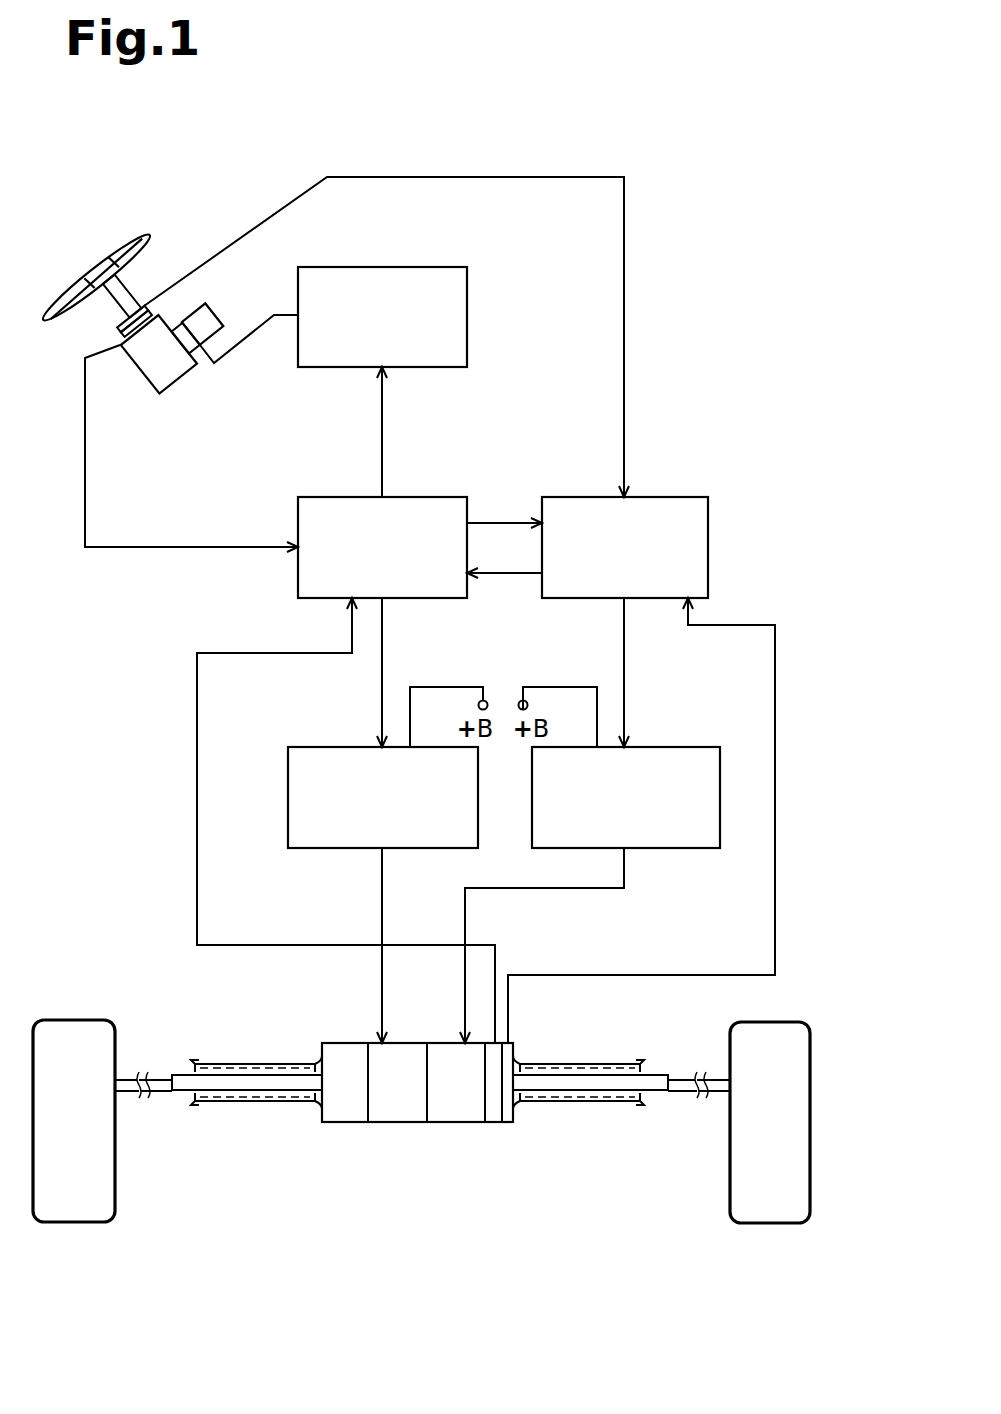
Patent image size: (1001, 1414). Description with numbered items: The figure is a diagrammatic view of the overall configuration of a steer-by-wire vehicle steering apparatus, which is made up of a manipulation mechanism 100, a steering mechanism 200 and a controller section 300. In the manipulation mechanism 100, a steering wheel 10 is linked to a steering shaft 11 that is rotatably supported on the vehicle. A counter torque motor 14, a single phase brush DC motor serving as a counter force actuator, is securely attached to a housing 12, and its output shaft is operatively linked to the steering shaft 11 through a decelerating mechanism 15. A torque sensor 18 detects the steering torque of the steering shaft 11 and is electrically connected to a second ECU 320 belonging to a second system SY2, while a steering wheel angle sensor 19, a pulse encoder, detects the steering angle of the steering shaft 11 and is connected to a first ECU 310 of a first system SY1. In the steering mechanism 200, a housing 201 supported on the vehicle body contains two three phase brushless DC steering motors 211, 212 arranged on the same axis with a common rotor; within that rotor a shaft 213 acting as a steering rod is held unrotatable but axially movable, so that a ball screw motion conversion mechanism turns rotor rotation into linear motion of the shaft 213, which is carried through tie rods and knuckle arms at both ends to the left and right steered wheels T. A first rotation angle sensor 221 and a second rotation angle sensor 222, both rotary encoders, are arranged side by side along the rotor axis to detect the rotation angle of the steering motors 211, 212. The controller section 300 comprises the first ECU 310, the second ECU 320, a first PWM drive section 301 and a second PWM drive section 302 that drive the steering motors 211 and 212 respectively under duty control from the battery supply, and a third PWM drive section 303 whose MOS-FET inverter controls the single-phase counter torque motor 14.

The steering wheel 10 is at (128, 240).
The steering shaft 11 is at (123, 300).
The housing 12 is at (157, 387).
The counter torque motor 14 is at (212, 308).
The decelerating mechanism 15 is at (207, 349).
The torque sensor 18 is at (117, 325).
The steering wheel angle sensor 19 is at (118, 340).
The manipulation mechanism 100 is at (148, 312).
The steering mechanism 200 is at (422, 1130).
The housing 201 is at (527, 1063).
The steering motor 211 is at (447, 1122).
The steering motor 212 is at (388, 1122).
The shaft 213 is at (283, 1090).
The first rotation angle sensor 221 is at (508, 1122).
The second rotation angle sensor 222 is at (493, 1122).
The controller section 300 is at (531, 529).
The first PWM drive section 301 is at (690, 747).
The second PWM drive section 302 is at (288, 772).
The third PWM drive section 303 is at (443, 267).
The first ECU 310 is at (677, 497).
The second ECU 320 is at (330, 497).
The first system SY1 is at (621, 622).
The second system SY2 is at (343, 622).
The steered wheels T is at (115, 1178).